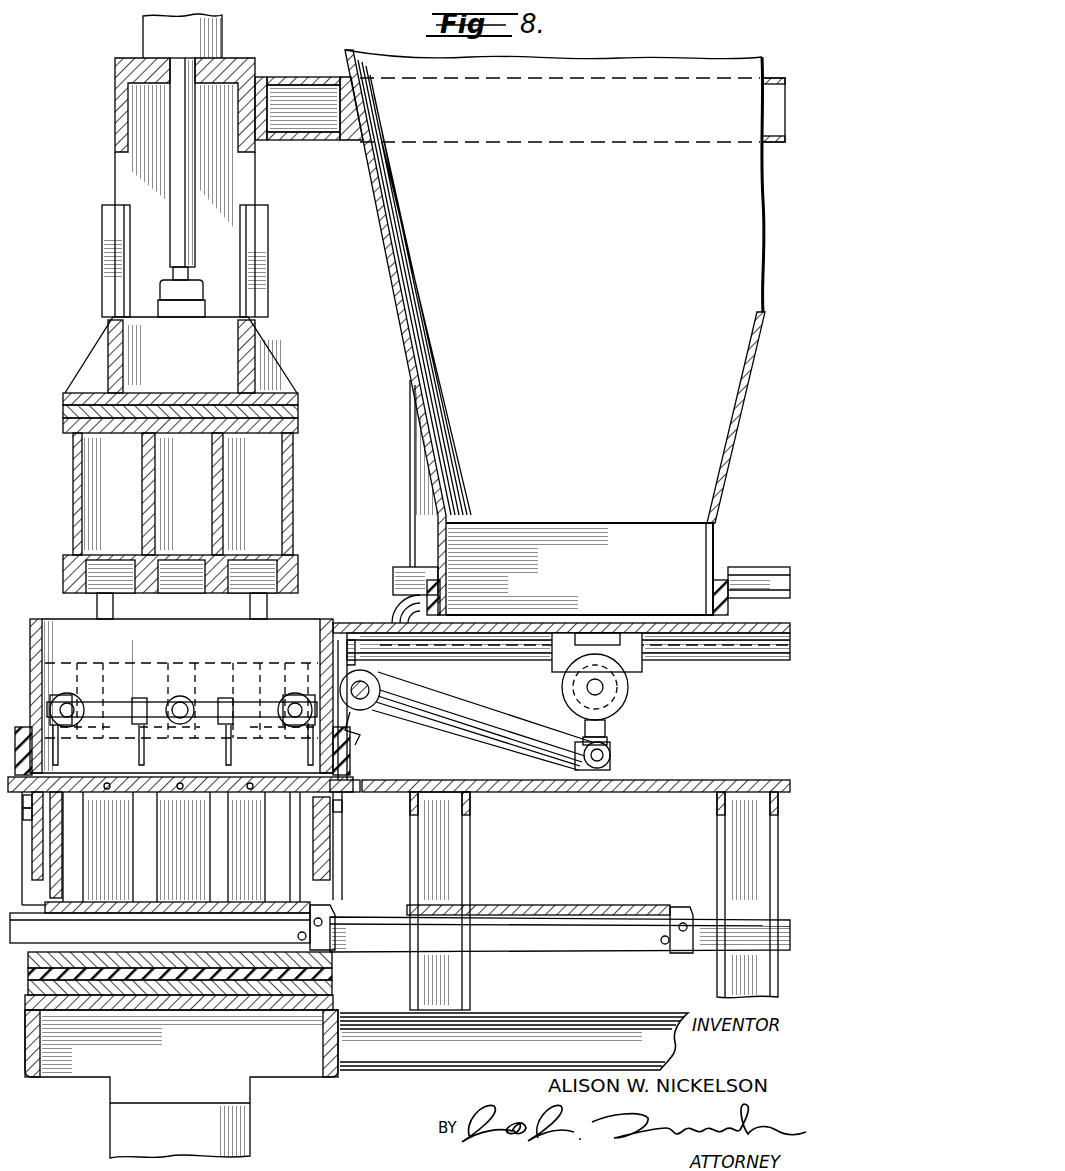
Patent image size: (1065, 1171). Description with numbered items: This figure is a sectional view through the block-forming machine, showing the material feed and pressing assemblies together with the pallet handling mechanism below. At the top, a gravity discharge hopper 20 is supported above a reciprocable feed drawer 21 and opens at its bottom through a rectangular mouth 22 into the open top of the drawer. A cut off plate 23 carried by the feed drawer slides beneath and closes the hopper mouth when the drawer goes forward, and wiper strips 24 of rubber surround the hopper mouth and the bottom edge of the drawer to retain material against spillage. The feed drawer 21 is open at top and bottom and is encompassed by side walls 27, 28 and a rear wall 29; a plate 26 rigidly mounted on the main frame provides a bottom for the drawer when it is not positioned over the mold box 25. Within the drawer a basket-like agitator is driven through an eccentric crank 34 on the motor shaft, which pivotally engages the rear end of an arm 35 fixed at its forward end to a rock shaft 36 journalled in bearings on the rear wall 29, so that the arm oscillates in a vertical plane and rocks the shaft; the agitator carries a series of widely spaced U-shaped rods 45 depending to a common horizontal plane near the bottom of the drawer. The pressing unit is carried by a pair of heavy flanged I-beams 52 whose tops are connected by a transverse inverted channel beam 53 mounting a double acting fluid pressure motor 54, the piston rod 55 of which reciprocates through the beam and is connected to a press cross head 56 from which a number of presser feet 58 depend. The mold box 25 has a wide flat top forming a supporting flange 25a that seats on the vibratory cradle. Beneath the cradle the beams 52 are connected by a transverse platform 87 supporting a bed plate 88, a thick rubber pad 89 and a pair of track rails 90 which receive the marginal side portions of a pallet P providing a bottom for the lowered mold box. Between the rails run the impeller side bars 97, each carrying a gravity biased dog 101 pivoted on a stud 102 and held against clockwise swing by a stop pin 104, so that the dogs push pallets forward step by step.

The gravity discharge hopper 20 is at (420, 255).
The feed drawer 21 is at (49, 607).
The rectangular mouth 22 is at (700, 540).
The cut off plate 23 is at (540, 620).
The wiper strips 24 is at (428, 585).
The mold box 25 is at (68, 852).
The supporting flange 25a is at (352, 800).
The plate 26 is at (686, 780).
The side wall 27 is at (55, 655).
The side wall 28 is at (205, 640).
The rear wall 29 is at (325, 640).
The eccentric crank 34 is at (612, 722).
The arm 35 is at (460, 712).
The rock shaft 36 is at (365, 710).
The rods 45 is at (148, 760).
The I-beams 52 is at (116, 173).
The inverted channel beam 53 is at (117, 88).
The fluid pressure motor 54 is at (222, 38).
The piston rod 55 is at (190, 195).
The press cross head 56 is at (268, 378).
The presser feet 58 is at (78, 488).
The platform 87 is at (288, 1012).
The bed plate 88 is at (220, 1012).
The rubber pad 89 is at (138, 1012).
The track rails 90 is at (138, 962).
The side bars 97 is at (542, 935).
The dog 101 is at (335, 950).
The stud 102 is at (336, 948).
The stop pin 104 is at (298, 936).
The pallet P is at (238, 900).